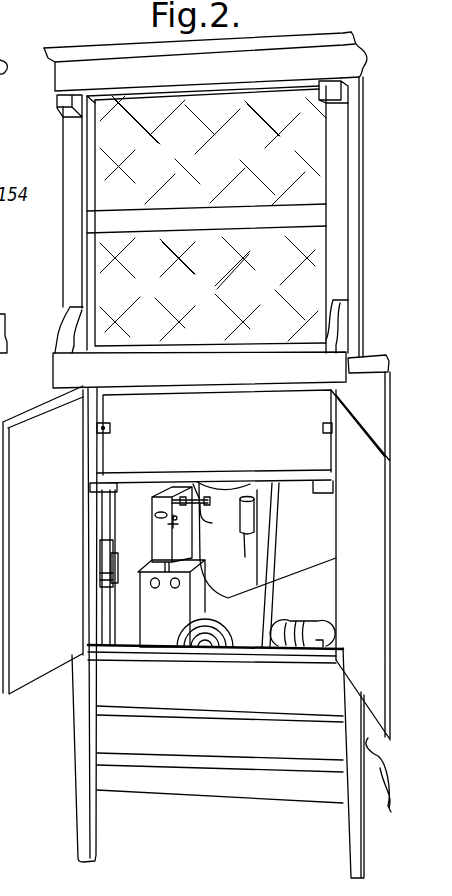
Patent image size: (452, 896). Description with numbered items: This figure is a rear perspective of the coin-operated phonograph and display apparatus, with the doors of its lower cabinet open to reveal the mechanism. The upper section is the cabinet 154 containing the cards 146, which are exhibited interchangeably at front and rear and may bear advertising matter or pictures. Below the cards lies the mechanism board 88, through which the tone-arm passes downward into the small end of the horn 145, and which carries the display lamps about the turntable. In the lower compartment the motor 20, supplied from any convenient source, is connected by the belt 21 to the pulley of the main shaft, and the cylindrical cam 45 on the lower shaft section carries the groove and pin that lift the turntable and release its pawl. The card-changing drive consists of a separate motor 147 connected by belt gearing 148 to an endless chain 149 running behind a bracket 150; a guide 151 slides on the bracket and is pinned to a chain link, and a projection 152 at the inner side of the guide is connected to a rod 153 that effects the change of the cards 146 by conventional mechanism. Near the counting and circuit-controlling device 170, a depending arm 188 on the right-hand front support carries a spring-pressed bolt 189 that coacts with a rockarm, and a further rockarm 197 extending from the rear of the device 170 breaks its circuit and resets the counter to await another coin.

The cards 146 is at (298, 157).
The cabinet 154 is at (358, 199).
The depending arm 188 is at (191, 472).
The mechanism board 88 is at (286, 478).
The counting and circuit-controlling device 170 is at (155, 510).
The rockarm 197 is at (168, 524).
The bolt 189 is at (243, 512).
The cylindrical cam 45 is at (247, 530).
The horn 145 is at (266, 540).
The belt 21 is at (277, 526).
The motor 147 is at (228, 630).
The motor 20 is at (307, 610).
The belt gearing 148 is at (181, 644).
The rod 153 is at (96, 525).
The bracket 150 is at (112, 543).
The projection 152 is at (100, 573).
The guide 151 is at (107, 582).
The endless chain 149 is at (107, 613).